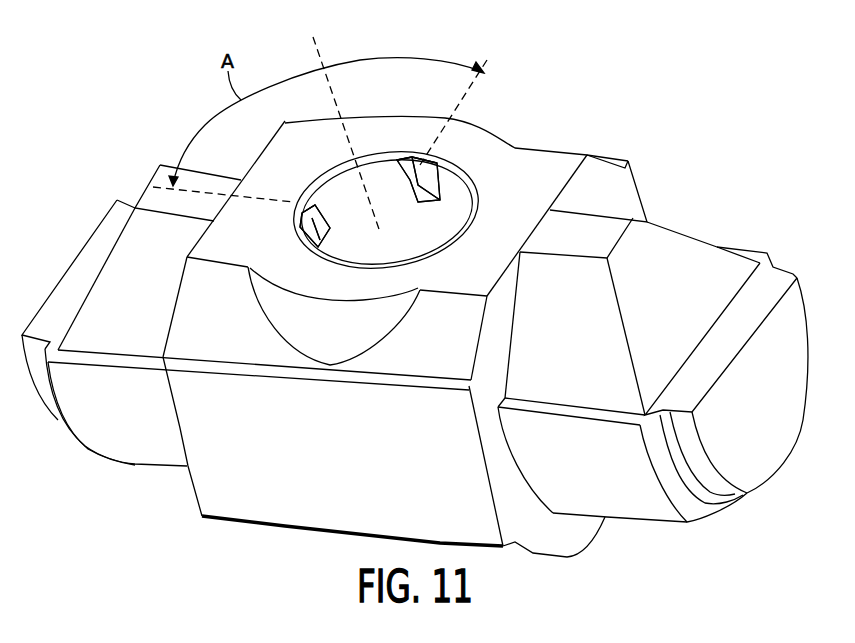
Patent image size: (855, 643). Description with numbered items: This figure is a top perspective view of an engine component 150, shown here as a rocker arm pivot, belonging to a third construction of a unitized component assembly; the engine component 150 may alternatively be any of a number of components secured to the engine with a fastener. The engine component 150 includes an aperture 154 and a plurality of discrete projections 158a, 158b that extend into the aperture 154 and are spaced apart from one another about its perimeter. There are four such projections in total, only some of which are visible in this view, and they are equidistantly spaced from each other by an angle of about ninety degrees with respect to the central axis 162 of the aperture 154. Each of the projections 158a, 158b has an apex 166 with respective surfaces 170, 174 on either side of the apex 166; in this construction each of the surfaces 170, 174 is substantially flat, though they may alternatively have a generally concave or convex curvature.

The engine component 150 is at (531, 98).
The aperture 154 is at (422, 252).
The projection 158a is at (333, 246).
The projection 158b is at (447, 190).
The central axis 162 is at (323, 50).
The apex 166 is at (418, 183).
The surface 170 is at (411, 185).
The surface 174 is at (447, 182).